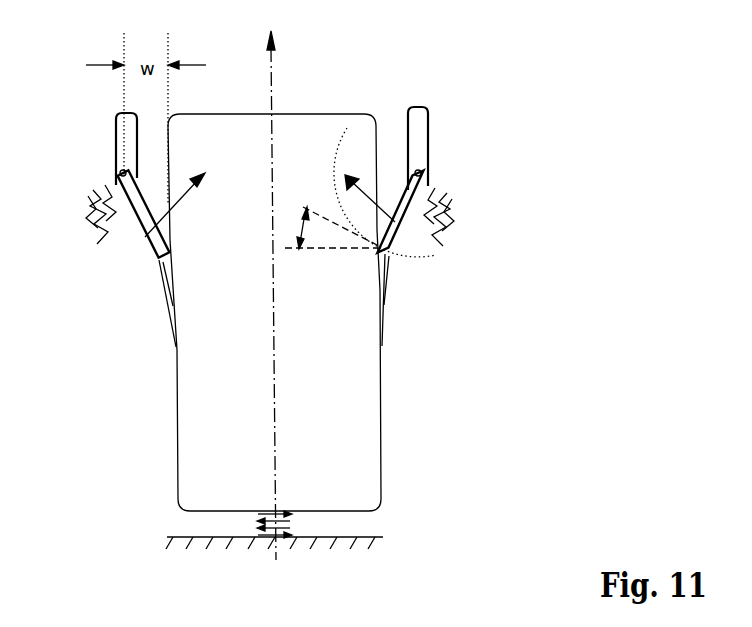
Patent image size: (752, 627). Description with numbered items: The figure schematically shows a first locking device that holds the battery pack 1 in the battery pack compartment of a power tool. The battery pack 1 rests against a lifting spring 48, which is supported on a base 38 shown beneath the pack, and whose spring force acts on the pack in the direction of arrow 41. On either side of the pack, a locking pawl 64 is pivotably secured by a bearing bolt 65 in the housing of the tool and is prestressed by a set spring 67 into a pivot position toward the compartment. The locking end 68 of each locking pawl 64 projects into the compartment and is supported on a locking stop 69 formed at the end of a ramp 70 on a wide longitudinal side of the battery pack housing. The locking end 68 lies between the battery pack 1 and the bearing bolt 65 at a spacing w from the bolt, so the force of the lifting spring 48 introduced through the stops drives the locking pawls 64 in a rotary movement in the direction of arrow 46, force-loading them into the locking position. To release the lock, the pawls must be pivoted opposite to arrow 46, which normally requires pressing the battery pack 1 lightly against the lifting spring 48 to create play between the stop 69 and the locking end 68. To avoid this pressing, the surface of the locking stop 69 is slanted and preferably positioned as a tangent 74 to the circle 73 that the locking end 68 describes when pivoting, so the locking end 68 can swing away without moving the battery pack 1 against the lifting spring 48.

The battery pack 1 is at (368, 114).
The ground surface 38 is at (190, 537).
The arrow 41 is at (273, 72).
The arrow 46 is at (155, 240).
The lifting spring 48 is at (291, 519).
The locking pawl 64 is at (116, 129).
The bearing bolt 65 is at (120, 170).
The set spring 67 is at (101, 192).
The locking end 68 is at (160, 257).
The locking stop 69 is at (161, 268).
The ramp 70 is at (164, 290).
The circle 73 is at (430, 262).
The tangent 74 is at (300, 203).